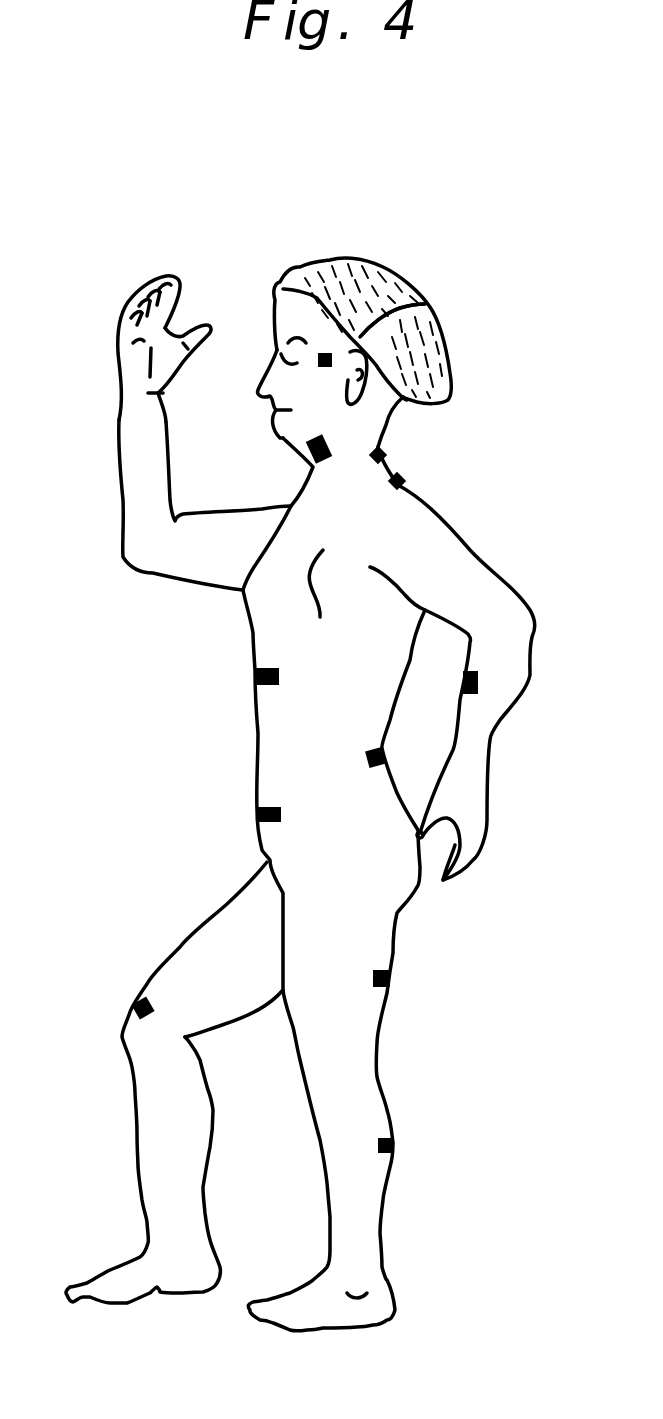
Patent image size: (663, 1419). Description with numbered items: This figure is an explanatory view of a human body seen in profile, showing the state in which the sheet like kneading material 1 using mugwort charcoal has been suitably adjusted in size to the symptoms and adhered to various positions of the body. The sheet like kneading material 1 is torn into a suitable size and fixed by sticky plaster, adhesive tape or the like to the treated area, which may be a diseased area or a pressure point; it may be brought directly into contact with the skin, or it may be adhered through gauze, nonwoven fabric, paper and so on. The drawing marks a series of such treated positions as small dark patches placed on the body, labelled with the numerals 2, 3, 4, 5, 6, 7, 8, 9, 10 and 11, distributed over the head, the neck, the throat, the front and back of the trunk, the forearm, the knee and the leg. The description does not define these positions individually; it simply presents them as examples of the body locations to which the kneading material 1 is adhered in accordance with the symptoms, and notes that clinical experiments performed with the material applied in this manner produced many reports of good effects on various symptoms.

The sheet like kneading material 1 is at (280, 353).
The sensor/marker at head (hair) 2 is at (333, 357).
The sensors at back of neck 3 is at (387, 452).
The sensor at upper abdomen 4 is at (257, 672).
The sensor at lower abdomen 5 is at (258, 810).
The sensor at throat 6 is at (313, 450).
The sensor at knee 7 is at (137, 1000).
The sensor at forearm 8 is at (478, 683).
The sensor at lower back 9 is at (383, 757).
The sensor at thigh/back of leg 10 is at (390, 977).
The sensor at calf 11 is at (393, 1143).